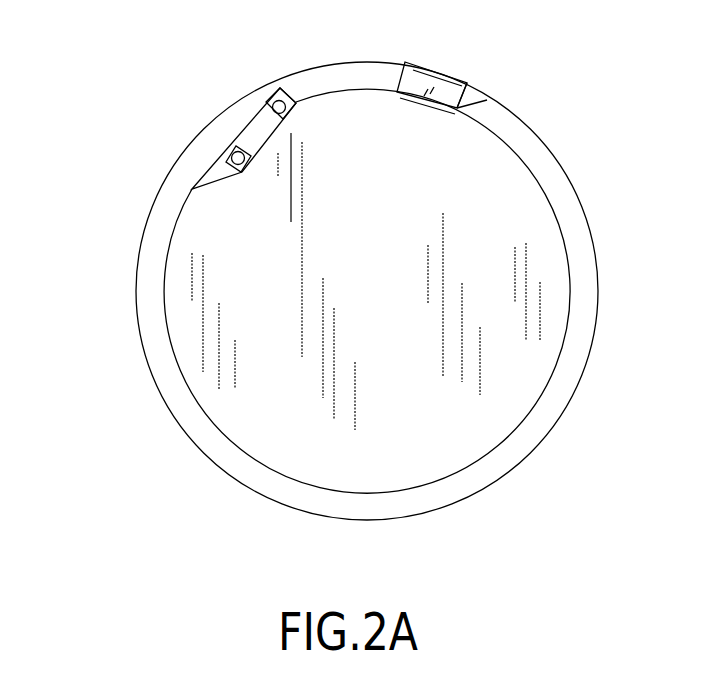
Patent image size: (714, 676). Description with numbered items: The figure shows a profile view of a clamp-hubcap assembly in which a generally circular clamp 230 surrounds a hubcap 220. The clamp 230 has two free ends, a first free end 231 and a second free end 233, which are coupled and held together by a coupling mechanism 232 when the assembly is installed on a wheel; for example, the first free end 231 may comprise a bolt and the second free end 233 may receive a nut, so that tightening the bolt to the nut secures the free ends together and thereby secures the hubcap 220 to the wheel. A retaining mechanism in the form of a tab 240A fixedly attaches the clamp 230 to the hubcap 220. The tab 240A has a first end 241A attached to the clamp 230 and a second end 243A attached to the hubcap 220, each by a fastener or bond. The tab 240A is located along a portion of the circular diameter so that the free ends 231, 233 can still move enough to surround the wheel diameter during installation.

The hubcap 220 is at (500, 437).
The clamp 230 is at (153, 385).
The first free end 231 is at (415, 72).
The coupling mechanism 232 is at (468, 83).
The second free end 233 is at (487, 100).
The tab 240A is at (256, 133).
The first end 241A is at (283, 90).
The second end 243A is at (192, 188).